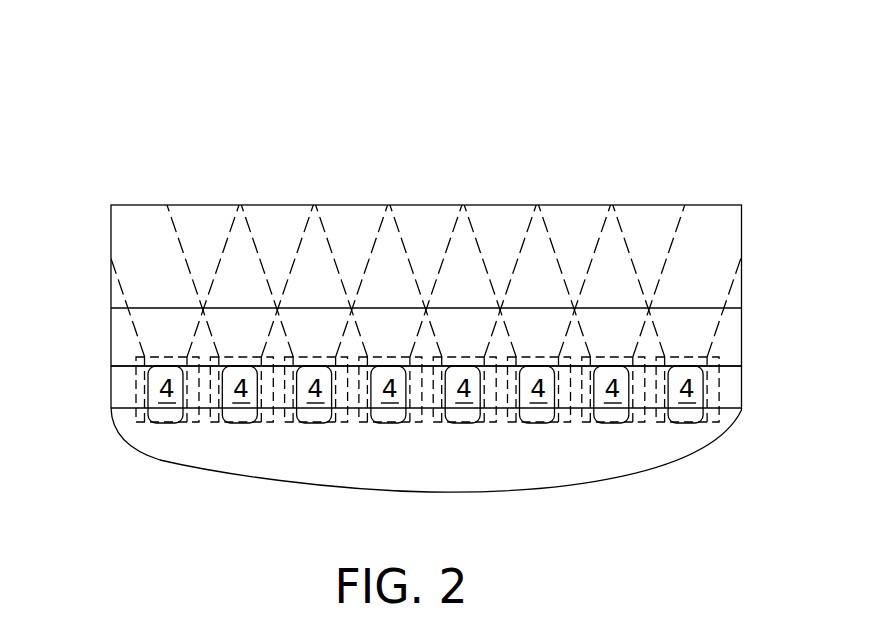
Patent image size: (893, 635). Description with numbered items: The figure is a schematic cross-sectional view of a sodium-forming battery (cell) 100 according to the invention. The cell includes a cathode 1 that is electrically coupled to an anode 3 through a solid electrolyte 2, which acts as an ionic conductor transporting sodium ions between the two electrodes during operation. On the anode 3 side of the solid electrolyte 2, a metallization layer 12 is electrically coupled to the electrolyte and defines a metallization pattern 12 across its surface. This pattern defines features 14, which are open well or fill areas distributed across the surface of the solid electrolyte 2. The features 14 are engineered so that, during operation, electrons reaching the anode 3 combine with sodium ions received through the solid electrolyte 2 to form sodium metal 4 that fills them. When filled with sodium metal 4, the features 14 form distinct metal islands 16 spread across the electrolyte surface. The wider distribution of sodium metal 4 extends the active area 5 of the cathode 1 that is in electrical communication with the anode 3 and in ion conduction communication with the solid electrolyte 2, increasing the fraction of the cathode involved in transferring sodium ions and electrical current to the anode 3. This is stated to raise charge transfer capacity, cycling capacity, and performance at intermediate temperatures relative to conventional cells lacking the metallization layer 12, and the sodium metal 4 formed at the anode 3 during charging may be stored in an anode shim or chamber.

The sodium-forming battery 100 is at (160, 95).
The cathode 1 is at (110, 262).
The solid electrolyte 2 is at (742, 337).
The anode 3 is at (690, 487).
The sodium metal 4 is at (427, 423).
The active area 5 is at (111, 190).
The metallization layer 12 is at (122, 387).
The features 14 is at (208, 367).
The metal islands 16 is at (225, 420).